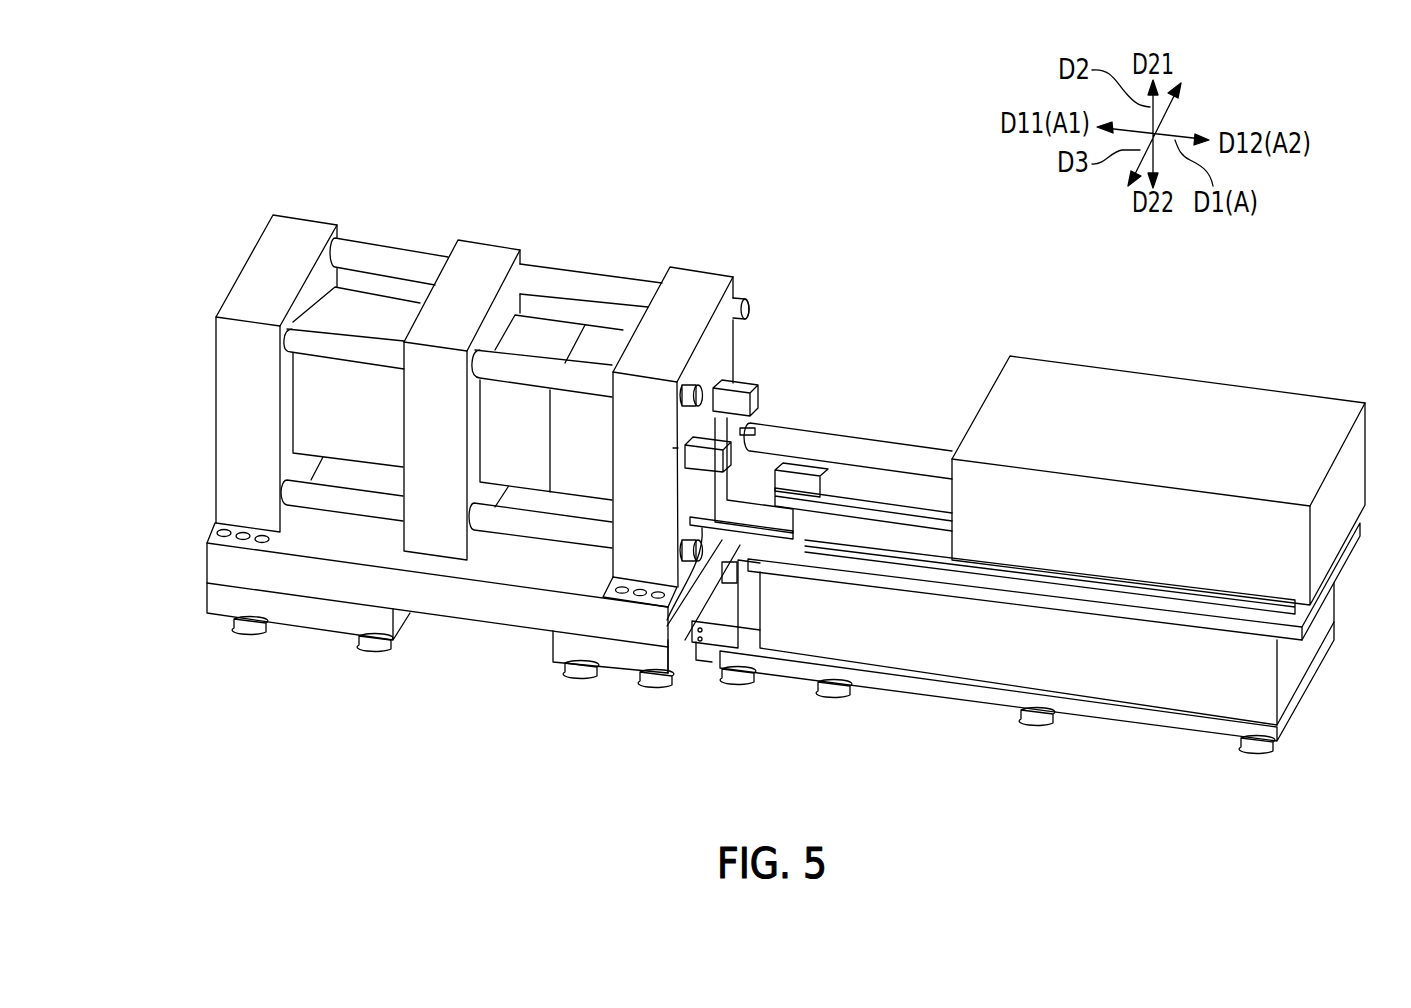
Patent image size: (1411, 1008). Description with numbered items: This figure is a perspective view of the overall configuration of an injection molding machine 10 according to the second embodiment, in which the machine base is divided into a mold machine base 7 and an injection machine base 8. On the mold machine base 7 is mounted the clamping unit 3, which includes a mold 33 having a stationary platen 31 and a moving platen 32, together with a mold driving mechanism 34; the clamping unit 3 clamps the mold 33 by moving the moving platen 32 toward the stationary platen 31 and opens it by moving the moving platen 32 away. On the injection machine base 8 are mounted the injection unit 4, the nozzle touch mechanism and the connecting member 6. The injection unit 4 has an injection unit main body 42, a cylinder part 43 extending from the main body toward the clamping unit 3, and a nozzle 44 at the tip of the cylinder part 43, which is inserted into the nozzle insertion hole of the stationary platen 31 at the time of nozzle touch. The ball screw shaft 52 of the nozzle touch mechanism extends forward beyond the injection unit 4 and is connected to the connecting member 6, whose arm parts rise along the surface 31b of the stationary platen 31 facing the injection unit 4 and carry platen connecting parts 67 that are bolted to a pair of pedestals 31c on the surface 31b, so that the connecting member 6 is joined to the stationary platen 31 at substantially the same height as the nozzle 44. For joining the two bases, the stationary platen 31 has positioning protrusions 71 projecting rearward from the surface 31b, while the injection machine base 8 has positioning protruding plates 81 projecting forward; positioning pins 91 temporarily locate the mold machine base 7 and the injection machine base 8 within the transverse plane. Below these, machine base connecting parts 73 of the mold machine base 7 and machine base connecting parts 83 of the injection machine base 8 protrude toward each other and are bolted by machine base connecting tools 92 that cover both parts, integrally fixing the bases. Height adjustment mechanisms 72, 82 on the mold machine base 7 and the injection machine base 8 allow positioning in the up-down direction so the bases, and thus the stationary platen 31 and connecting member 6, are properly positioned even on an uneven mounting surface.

The clamping unit 3 is at (548, 130).
The injection unit 4 is at (1223, 310).
The connecting member 6 is at (832, 340).
The mold machine base 7 is at (233, 565).
The injection machine base 8 is at (1292, 661).
The injection molding machine 10 is at (893, 118).
The stationary platen 31 is at (698, 270).
The surface 31b is at (715, 340).
The pedestals 31c is at (673, 448).
The moving platen 32 is at (483, 236).
The mold 33 is at (604, 246).
The mold driving mechanism 34 is at (370, 300).
The injection unit main body 42 is at (1087, 385).
The cylinder part 43 is at (870, 442).
The nozzle 44 is at (756, 431).
The ball screw shaft 52 is at (918, 508).
The platen connecting parts 67 is at (740, 380).
The positioning protrusion 71 is at (667, 613).
The height adjustment mechanism 72 is at (378, 652).
The machine base connecting part 73 is at (670, 658).
The positioning protruding plate 81 is at (760, 562).
The height adjustment mechanism 82 is at (834, 698).
The machine base connecting part 83 is at (753, 618).
The positioning pins 91 is at (697, 512).
The machine base connecting tools 92 is at (707, 647).